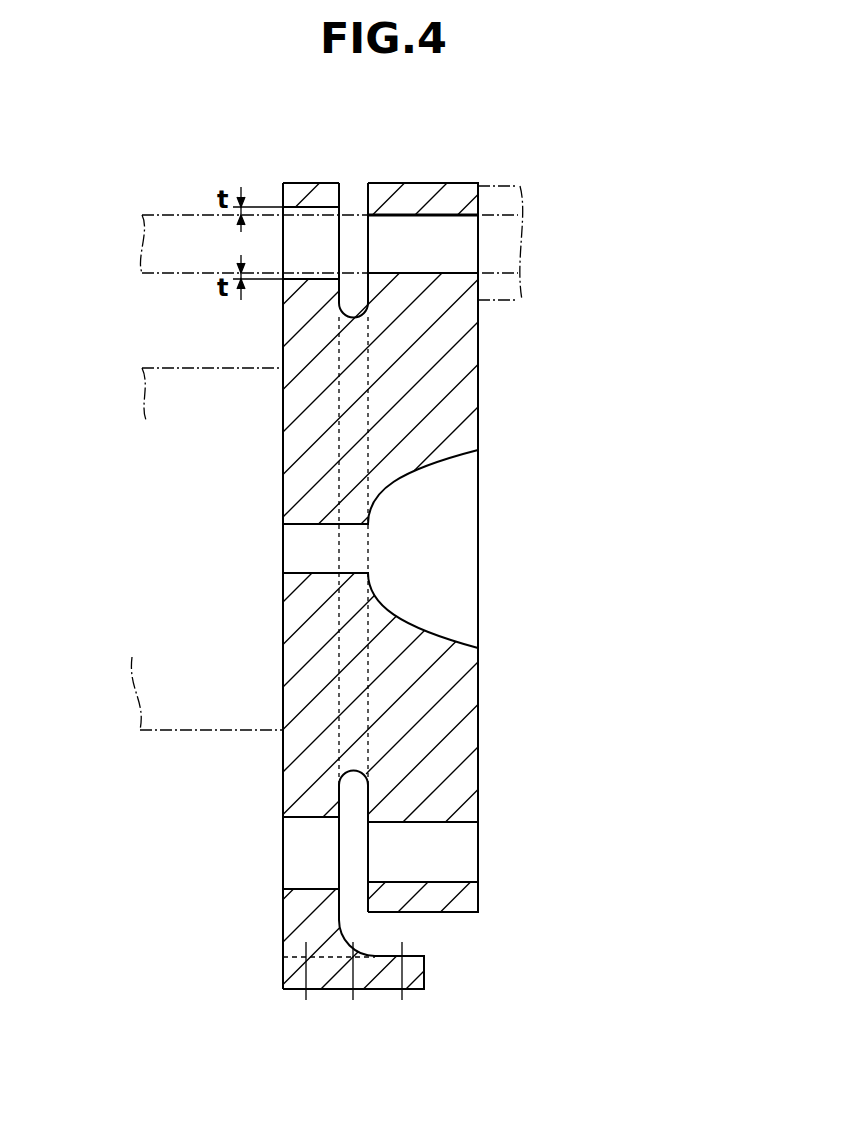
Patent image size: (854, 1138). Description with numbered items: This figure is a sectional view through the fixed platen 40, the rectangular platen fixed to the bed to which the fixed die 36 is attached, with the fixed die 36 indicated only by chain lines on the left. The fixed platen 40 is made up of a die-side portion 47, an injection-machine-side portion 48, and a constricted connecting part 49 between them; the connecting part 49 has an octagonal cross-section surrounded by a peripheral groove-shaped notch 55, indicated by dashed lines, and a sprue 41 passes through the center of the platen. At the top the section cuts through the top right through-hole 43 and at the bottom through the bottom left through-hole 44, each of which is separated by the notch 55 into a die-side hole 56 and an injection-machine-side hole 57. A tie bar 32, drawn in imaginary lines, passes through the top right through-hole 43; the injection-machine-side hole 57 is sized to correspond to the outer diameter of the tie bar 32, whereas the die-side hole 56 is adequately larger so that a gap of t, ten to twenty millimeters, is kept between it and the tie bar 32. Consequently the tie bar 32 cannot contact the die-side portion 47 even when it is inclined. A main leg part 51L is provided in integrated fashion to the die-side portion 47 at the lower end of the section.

The fixed platen 40 is at (566, 176).
The tie bar 32 is at (178, 212).
The fixed die 36 is at (167, 367).
The sprue 41 is at (388, 493).
The top right through-hole 43 is at (488, 244).
The bottom left through-hole 44 is at (501, 875).
The die-side portion 47 is at (295, 331).
The injection-machine-side portion 48 is at (455, 416).
The connecting part 49 is at (353, 337).
The left leg part 51L is at (338, 977).
The notch 55 is at (352, 300).
The die-side hole 56 is at (318, 207).
The injection-machine-side hole 57 is at (432, 215).